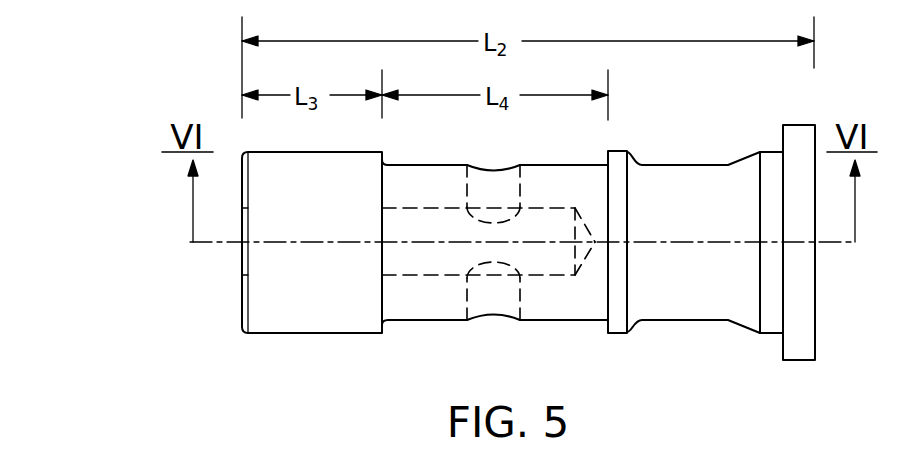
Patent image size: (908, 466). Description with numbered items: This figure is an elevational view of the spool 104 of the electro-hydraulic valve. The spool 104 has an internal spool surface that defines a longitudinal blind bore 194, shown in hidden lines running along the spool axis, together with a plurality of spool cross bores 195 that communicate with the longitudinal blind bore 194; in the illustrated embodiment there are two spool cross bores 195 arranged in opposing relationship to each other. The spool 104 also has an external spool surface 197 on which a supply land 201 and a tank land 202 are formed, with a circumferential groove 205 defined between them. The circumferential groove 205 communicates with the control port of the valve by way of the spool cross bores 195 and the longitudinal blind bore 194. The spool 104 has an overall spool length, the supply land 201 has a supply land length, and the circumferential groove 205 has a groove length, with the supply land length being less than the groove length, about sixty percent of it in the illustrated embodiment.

The spool 104 is at (78, 118).
The longitudinal blind bore 194 is at (272, 258).
The spool cross bores 195 is at (495, 170).
The external spool surface 197 is at (710, 213).
The supply land 201 is at (313, 333).
The tank land 202 is at (620, 333).
The circumferential groove 205 is at (431, 320).